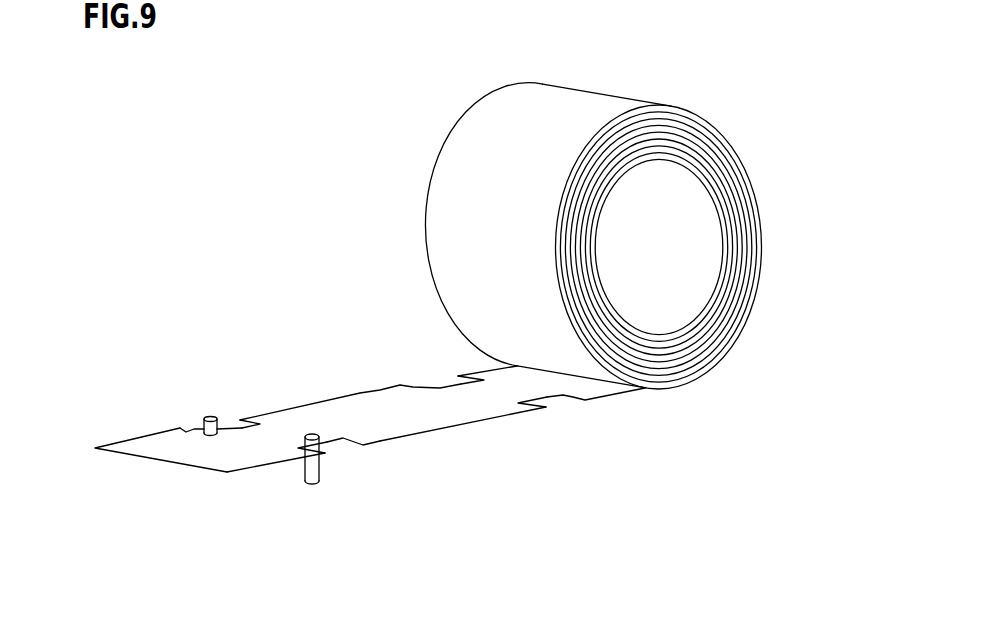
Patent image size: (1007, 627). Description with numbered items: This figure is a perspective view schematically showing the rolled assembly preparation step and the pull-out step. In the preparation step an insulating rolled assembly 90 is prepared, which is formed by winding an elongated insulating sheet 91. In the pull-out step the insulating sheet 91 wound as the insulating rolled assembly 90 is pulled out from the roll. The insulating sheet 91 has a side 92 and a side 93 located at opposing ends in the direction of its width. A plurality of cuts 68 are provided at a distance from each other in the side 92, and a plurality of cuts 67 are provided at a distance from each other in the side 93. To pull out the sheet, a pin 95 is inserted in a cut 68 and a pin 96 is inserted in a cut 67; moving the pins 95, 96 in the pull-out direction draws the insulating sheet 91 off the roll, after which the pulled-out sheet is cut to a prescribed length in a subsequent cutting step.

The insulating rolled assembly 90 is at (555, 92).
The insulating sheet 91 is at (148, 443).
The side 92 is at (468, 425).
The side 93 is at (360, 393).
The cut 67 is at (240, 417).
The cut 68 is at (323, 445).
The pin 95 is at (310, 435).
The pin 96 is at (210, 417).